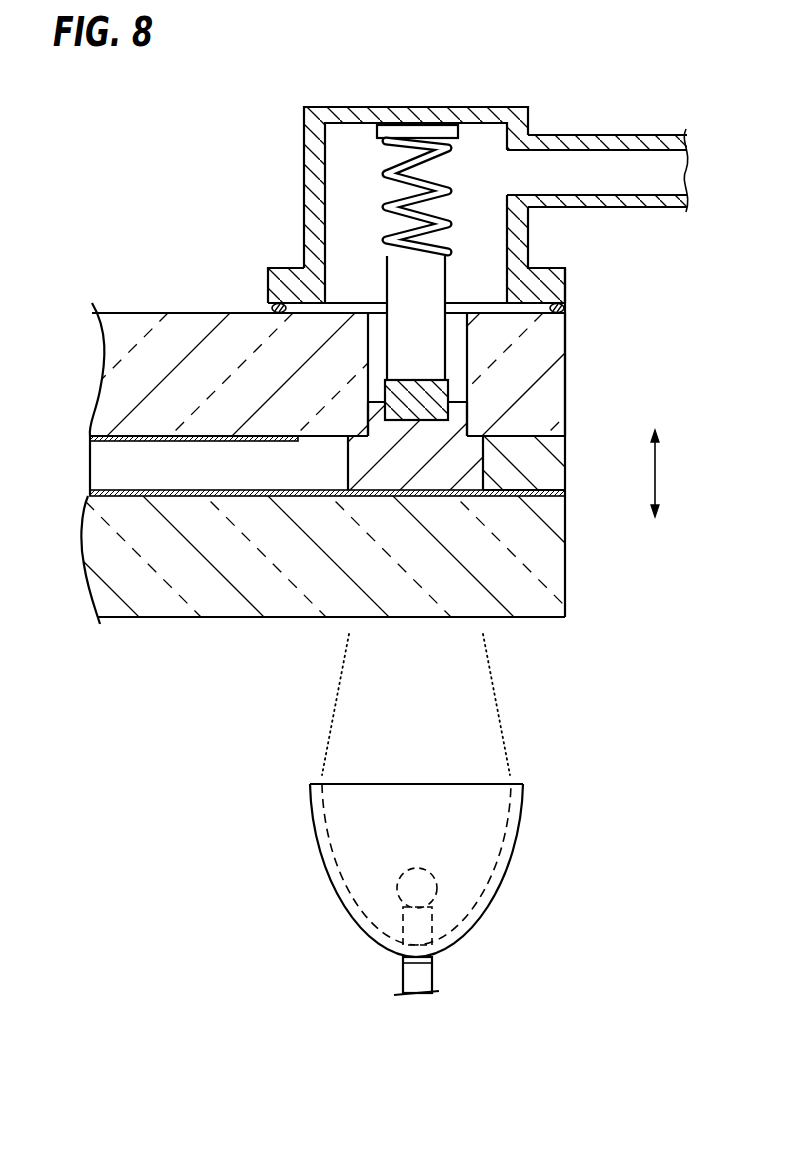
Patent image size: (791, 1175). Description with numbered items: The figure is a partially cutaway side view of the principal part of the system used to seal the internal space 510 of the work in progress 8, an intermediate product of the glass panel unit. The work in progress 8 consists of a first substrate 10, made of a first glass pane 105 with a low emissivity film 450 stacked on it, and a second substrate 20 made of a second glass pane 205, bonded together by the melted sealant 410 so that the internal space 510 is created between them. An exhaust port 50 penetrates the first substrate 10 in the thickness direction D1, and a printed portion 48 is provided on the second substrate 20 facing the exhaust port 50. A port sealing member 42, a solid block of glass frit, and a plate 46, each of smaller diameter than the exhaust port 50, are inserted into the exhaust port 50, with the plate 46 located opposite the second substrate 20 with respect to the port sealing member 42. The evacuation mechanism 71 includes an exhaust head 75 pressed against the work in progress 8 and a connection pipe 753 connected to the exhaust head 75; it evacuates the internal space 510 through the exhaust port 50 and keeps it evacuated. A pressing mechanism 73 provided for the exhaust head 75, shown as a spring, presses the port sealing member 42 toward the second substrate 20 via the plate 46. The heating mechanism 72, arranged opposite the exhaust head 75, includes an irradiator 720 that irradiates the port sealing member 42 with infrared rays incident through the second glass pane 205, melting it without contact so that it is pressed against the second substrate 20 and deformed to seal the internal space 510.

The work in progress 8 is at (421, 618).
The first substrate 10 is at (142, 323).
The first glass pane 105 is at (183, 333).
The second substrate 20 is at (167, 612).
The second glass pane 205 is at (229, 603).
The port sealing member 42 is at (362, 458).
The plate 46 is at (383, 387).
The printed portion 48 is at (238, 492).
The exhaust port 50 is at (460, 343).
The evacuation mechanism 71 is at (469, 202).
The heating mechanism 72 is at (404, 892).
The pressing mechanism 73 is at (392, 192).
The exhaust head 75 is at (310, 137).
The sealant 410 is at (557, 473).
The low emissivity film 450 is at (153, 438).
The internal space 510 is at (105, 467).
The irradiator 720 is at (472, 925).
The connection pipe 753 is at (597, 137).
The thickness direction D1 is at (668, 473).